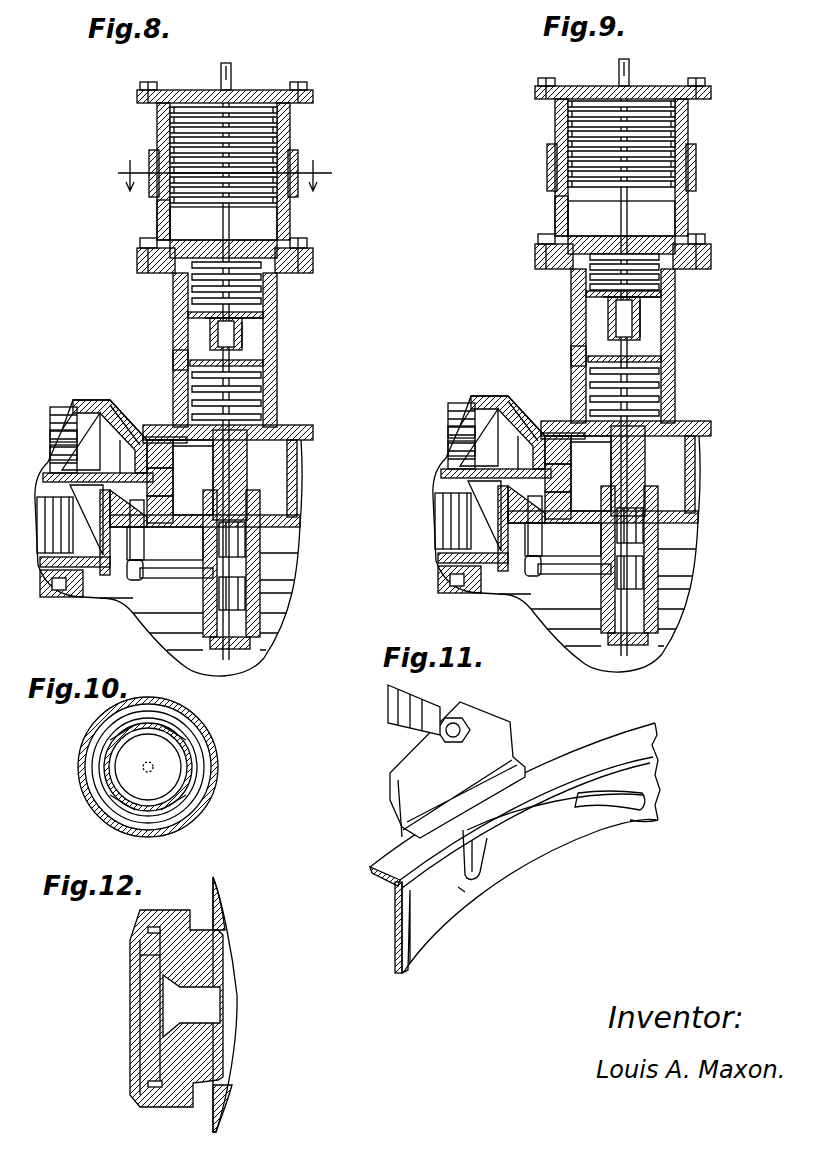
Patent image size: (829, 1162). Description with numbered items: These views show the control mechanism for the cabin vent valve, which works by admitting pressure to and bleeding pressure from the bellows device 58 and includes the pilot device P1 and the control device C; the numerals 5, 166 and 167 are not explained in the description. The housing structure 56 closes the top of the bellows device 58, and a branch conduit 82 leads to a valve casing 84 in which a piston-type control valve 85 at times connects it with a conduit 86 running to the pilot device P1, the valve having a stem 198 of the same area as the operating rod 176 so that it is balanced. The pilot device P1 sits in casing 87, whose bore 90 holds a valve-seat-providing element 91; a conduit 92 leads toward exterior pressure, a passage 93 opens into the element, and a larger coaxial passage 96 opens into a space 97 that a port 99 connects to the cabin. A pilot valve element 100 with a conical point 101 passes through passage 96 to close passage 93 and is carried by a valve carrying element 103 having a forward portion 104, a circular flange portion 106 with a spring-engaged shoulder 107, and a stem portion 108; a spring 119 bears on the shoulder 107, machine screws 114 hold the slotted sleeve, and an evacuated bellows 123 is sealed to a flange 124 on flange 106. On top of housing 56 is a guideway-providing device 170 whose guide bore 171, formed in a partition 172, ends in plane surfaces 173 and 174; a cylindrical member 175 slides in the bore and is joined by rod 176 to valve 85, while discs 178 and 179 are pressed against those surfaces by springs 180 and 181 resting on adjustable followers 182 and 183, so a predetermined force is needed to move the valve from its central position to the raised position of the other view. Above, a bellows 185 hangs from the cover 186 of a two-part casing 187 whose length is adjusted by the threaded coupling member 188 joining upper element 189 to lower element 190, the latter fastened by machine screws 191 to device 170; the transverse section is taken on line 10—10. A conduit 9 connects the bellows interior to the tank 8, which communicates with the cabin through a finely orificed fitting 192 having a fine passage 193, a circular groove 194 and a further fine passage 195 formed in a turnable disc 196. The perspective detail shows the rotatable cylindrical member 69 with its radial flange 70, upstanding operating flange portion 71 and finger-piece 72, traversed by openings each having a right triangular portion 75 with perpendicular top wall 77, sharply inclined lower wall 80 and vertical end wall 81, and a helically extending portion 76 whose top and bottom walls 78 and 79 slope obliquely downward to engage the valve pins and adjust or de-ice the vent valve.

In FIG. 8, the valve assembly 5 is at (287, 377).
In FIG. 9, the valve assembly 5 is at (650, 392).
In FIG. 12, the tank 8 is at (228, 958).
In FIG. 8, the conduit 9 is at (231, 73).
In FIG. 9, the conduit 9 is at (632, 66).
In FIG. 8, the section line 10 is at (222, 188).
In FIG. 8, the control device C is at (292, 220).
In FIG. 9, the control device C is at (643, 193).
In FIG. 8, the housing structure 56 is at (300, 520).
In FIG. 9, the housing structure 56 is at (625, 504).
In FIG. 8, the bellows device 58 is at (282, 614).
In FIG. 9, the bellows device 58 is at (580, 534).
In FIG. 11, the cylindrical member 69 is at (395, 918).
In FIG. 11, the radial flange 70 is at (370, 869).
In FIG. 11, the operating flange portion 71 is at (482, 712).
In FIG. 11, the button or finger-piece 72 is at (388, 698).
In FIG. 11, the right triangular portion 75 is at (476, 848).
In FIG. 11, the helically extending elongated portion 76 is at (563, 838).
In FIG. 11, the top wall 77 is at (492, 850).
In FIG. 11, the top wall 78 is at (585, 803).
In FIG. 11, the bottom wall 79 is at (607, 812).
In FIG. 11, the lower wall 80 is at (470, 882).
In FIG. 11, the end wall 81 is at (462, 885).
In FIG. 8, the branch 82 is at (260, 546).
In FIG. 9, the branch 82 is at (669, 559).
In FIG. 8, the valve casing 84 is at (246, 596).
In FIG. 9, the valve casing 84 is at (674, 574).
In FIG. 8, the control valve 85 is at (246, 556).
In FIG. 9, the control valve 85 is at (674, 539).
In FIG. 8, the conduit 86 is at (180, 578).
In FIG. 9, the conduit 86 is at (568, 575).
In FIG. 8, the casing 87 is at (105, 402).
In FIG. 9, the casing 87 is at (501, 416).
In FIG. 8, the bore or chamber 90 is at (135, 425).
In FIG. 9, the bore or chamber 90 is at (525, 408).
In FIG. 8, the valve-seat-providing element 91 is at (120, 440).
In FIG. 9, the valve-seat-providing element 91 is at (523, 430).
In FIG. 8, the conduit 92 is at (173, 480).
In FIG. 9, the conduit 92 is at (574, 477).
In FIG. 8, the passage 93 is at (173, 497).
In FIG. 9, the passage 93 is at (574, 499).
In FIG. 8, the passage 96 is at (108, 575).
In FIG. 9, the passage 96 is at (526, 540).
In FIG. 8, the space 97 is at (85, 598).
In FIG. 9, the space 97 is at (485, 549).
In FIG. 8, the port 99 is at (118, 410).
In FIG. 9, the port 99 is at (488, 416).
In FIG. 8, the pilot valve element 100 is at (148, 437).
In FIG. 9, the pilot valve element 100 is at (559, 414).
In FIG. 8, the conical point 101 is at (173, 462).
In FIG. 9, the conical point 101 is at (576, 451).
In FIG. 8, the valve carrying element 103 is at (56, 455).
In FIG. 9, the valve carrying element 103 is at (437, 456).
In FIG. 8, the forward portion 104 is at (56, 436).
In FIG. 9, the forward portion 104 is at (437, 458).
In FIG. 8, the circular flange portion 106 is at (60, 592).
In FIG. 9, the circular flange portion 106 is at (452, 596).
In FIG. 8, the peripheral shoulder 107 is at (137, 562).
In FIG. 9, the peripheral shoulder 107 is at (519, 543).
In FIG. 8, the stem portion 108 is at (50, 476).
In FIG. 9, the stem portion 108 is at (475, 490).
In FIG. 8, the machine screws 114 is at (40, 590).
In FIG. 9, the machine screws 114 is at (436, 579).
In FIG. 8, the spring 119 is at (40, 565).
In FIG. 9, the spring 119 is at (448, 553).
In FIG. 8, the evacuated bellows 123 is at (37, 540).
In FIG. 9, the evacuated bellows 123 is at (428, 521).
In FIG. 8, the flange 124 is at (62, 418).
In FIG. 9, the flange 124 is at (444, 436).
In FIG. 8, the port 166 is at (173, 446).
In FIG. 9, the port 166 is at (589, 492).
In FIG. 8, the channel 167 is at (150, 536).
In FIG. 9, the channel 167 is at (563, 541).
In FIG. 8, the guideway-providing device 170 is at (277, 360).
In FIG. 9, the guideway-providing device 170 is at (647, 346).
In FIG. 8, the guide bore 171 is at (242, 332).
In FIG. 9, the guide bore 171 is at (667, 315).
In FIG. 8, the partition 172 is at (248, 318).
In FIG. 9, the partition 172 is at (660, 286).
In FIG. 8, the plane surface 173 is at (263, 292).
In FIG. 9, the plane surface 173 is at (593, 285).
In FIG. 8, the plane surface 174 is at (182, 360).
In FIG. 9, the plane surface 174 is at (558, 351).
In FIG. 8, the cylindrical member 175 is at (210, 331).
In FIG. 9, the cylindrical member 175 is at (583, 318).
In FIG. 8, the rod 176 is at (250, 482).
In FIG. 9, the rod 176 is at (647, 436).
In FIG. 8, the disc 178 is at (190, 314).
In FIG. 9, the disc 178 is at (594, 284).
In FIG. 8, the disc 179 is at (263, 348).
In FIG. 9, the disc 179 is at (679, 322).
In FIG. 8, the spring 180 is at (313, 256).
In FIG. 9, the spring 180 is at (641, 233).
In FIG. 8, the spring 181 is at (263, 402).
In FIG. 9, the spring 181 is at (661, 385).
In FIG. 8, the adjustable follower 182 is at (280, 246).
In FIG. 9, the adjustable follower 182 is at (657, 214).
In FIG. 10, the adjustable follower 182 is at (192, 782).
In FIG. 8, the adjustable follower 183 is at (313, 434).
In FIG. 9, the adjustable follower 183 is at (645, 434).
In FIG. 8, the bellows 185 is at (292, 138).
In FIG. 9, the bellows 185 is at (657, 143).
In FIG. 10, the bellows 185 is at (200, 802).
In FIG. 8, the cover 186 is at (262, 90).
In FIG. 9, the cover 186 is at (623, 76).
In FIG. 8, the two-part casing 187 is at (290, 118).
In FIG. 9, the two-part casing 187 is at (710, 157).
In FIG. 8, the coupling member 188 is at (298, 160).
In FIG. 9, the coupling member 188 is at (646, 156).
In FIG. 10, the coupling member 188 is at (216, 745).
In FIG. 8, the upper element 189 is at (157, 128).
In FIG. 9, the upper element 189 is at (535, 167).
In FIG. 8, the lower element 190 is at (157, 222).
In FIG. 9, the lower element 190 is at (532, 213).
In FIG. 8, the machine screws 191 is at (140, 248).
In FIG. 9, the machine screws 191 is at (526, 226).
In FIG. 12, the fitting 192 is at (140, 925).
In FIG. 12, the fine passage 193 is at (165, 1040).
In FIG. 12, the circular groove 194 is at (155, 1065).
In FIG. 12, the fine passage 195 is at (140, 956).
In FIG. 12, the disc 196 is at (135, 992).
In FIG. 8, the stem 198 is at (245, 652).
In FIG. 9, the stem 198 is at (668, 644).
In FIG. 8, the pilot device P1 is at (78, 402).
In FIG. 9, the pilot device P1 is at (453, 398).